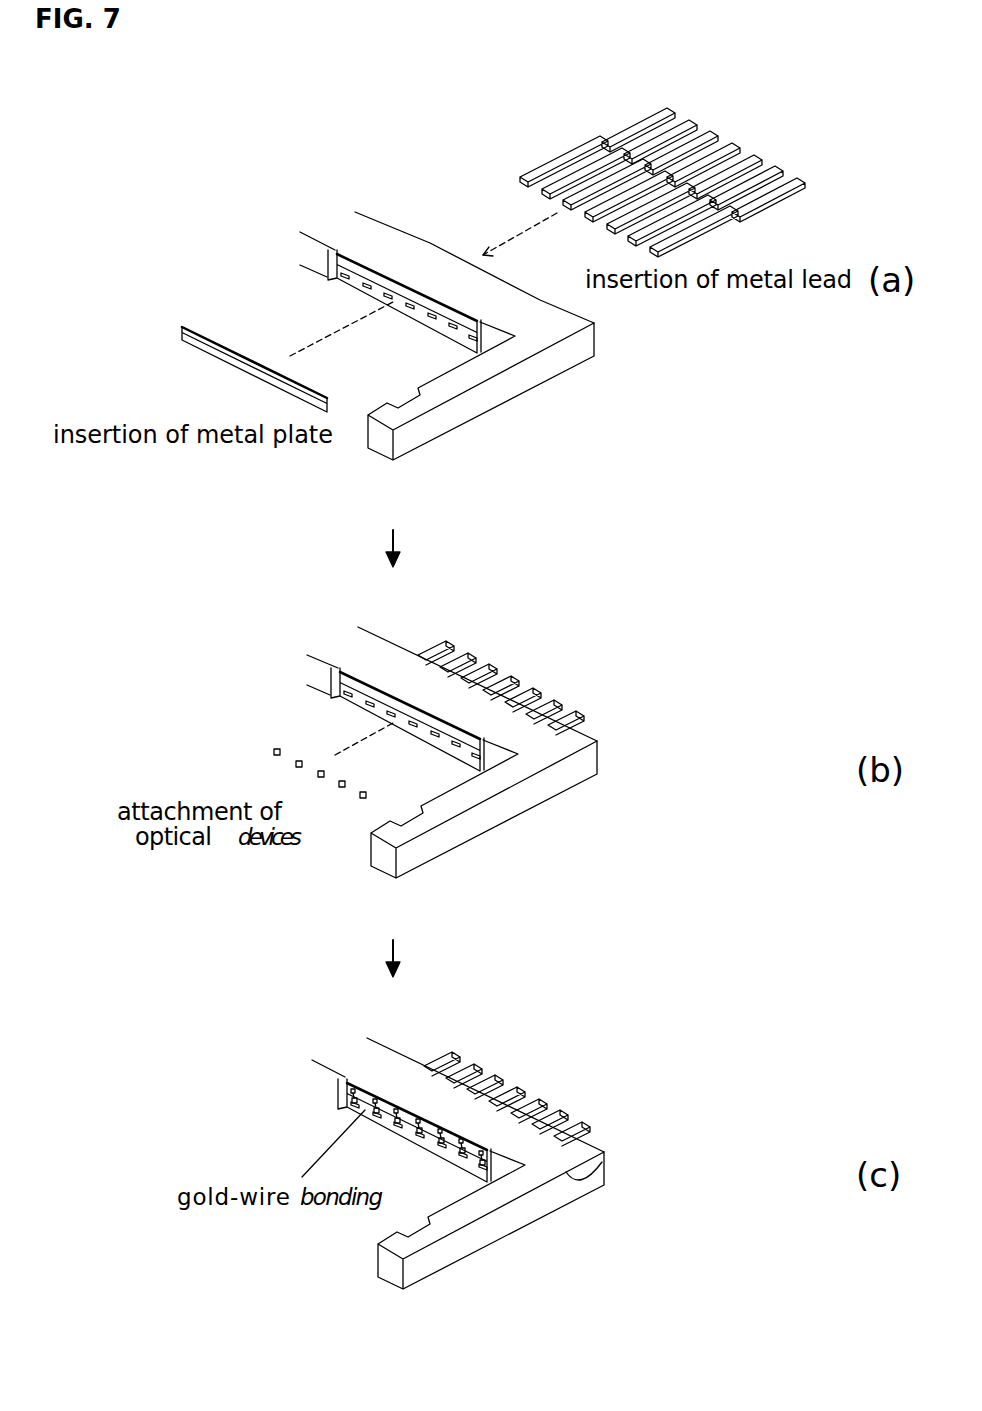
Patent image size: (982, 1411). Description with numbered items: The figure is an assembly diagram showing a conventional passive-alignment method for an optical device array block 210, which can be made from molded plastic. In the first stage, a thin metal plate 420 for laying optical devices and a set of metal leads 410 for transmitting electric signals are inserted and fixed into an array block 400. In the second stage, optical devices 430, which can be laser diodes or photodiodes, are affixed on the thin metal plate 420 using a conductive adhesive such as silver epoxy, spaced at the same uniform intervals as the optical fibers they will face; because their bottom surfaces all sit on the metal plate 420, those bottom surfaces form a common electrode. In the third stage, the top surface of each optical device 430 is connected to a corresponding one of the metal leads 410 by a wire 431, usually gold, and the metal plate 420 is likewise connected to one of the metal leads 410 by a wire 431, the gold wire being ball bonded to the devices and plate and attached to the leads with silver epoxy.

The optical device array block 210 is at (337, 108).
The array block 400 is at (363, 233).
The metal leads 410 is at (612, 122).
The thin metal plate 420 is at (220, 355).
The optical devices 430 is at (273, 753).
The wire 431 is at (340, 1098).